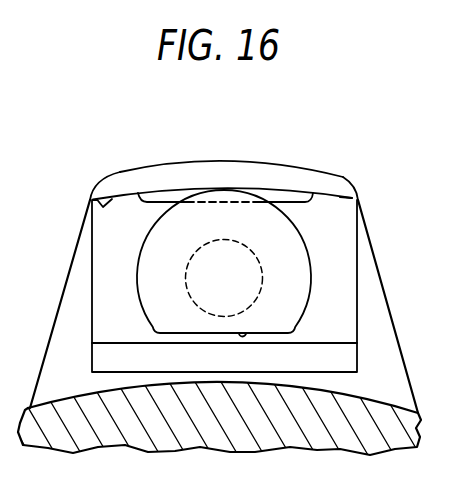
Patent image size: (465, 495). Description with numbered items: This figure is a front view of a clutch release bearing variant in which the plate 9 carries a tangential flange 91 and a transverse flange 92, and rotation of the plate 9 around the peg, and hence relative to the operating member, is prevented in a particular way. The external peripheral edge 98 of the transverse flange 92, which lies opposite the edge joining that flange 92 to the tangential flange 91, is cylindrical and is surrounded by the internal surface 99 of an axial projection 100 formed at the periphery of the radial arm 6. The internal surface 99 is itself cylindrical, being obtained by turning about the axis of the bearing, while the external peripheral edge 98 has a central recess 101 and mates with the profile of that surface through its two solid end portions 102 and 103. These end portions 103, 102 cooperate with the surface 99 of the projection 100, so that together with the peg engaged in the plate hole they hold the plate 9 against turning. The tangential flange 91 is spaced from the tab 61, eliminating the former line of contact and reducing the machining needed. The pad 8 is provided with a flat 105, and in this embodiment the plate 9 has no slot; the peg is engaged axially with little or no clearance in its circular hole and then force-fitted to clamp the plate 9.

The radial arm 6 is at (224, 158).
The pad 8 is at (152, 295).
The plate 9 is at (92, 260).
The tab 61 is at (137, 425).
The tangential flange 91 is at (182, 363).
The transverse flange 92 is at (348, 229).
The external peripheral edge 98 is at (343, 194).
The internal surface 99 is at (102, 198).
The axial projection 100 is at (185, 172).
The central recess 101 is at (266, 197).
The solid end portion 102 is at (324, 197).
The solid end portion 103 is at (121, 196).
The flat 105 is at (245, 333).